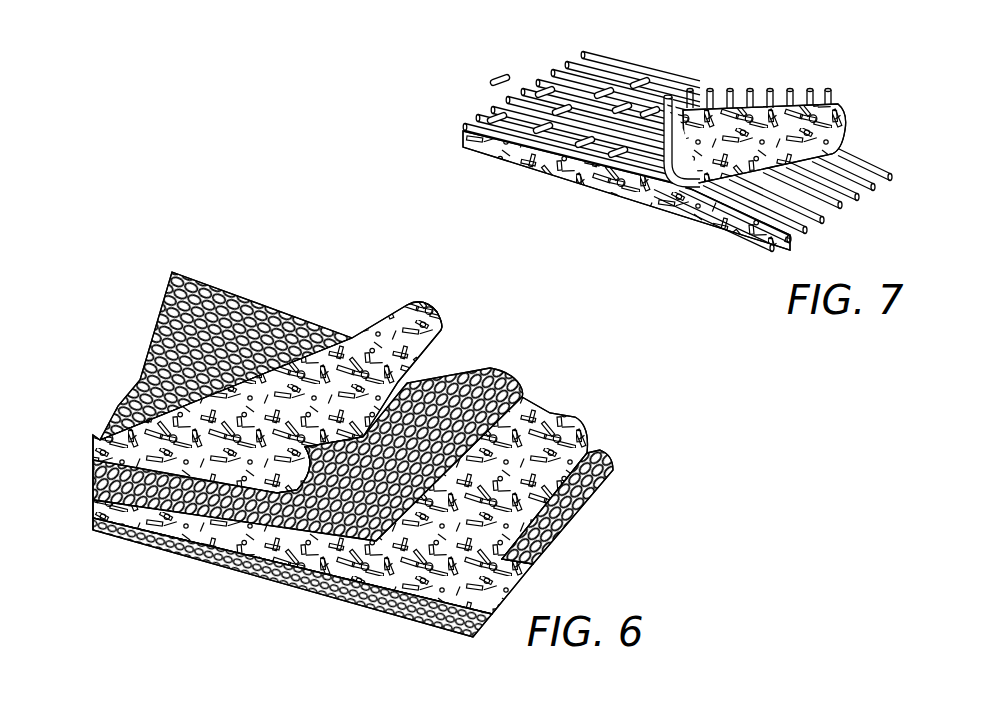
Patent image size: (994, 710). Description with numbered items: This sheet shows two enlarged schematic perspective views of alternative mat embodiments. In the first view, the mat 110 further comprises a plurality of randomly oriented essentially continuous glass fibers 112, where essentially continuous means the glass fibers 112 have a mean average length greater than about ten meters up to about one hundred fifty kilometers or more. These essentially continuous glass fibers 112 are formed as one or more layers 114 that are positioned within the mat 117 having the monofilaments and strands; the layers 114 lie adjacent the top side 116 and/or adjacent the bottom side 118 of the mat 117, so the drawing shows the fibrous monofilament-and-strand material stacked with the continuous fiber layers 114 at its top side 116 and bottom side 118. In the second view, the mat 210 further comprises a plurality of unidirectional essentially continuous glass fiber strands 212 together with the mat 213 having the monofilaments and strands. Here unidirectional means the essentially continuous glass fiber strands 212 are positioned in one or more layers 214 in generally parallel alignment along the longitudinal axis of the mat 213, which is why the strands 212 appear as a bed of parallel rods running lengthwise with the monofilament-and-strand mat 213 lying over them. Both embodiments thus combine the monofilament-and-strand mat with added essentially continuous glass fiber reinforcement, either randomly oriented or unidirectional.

In FIG. 6, the mat 110 is at (227, 570).
In FIG. 6, the randomly oriented essentially continuous glass fibers 112 is at (570, 537).
In FIG. 6, the layers 114 is at (243, 282).
In FIG. 6, the top side 116 is at (357, 317).
In FIG. 6, the mat having the monofilaments and strands 117 is at (103, 437).
In FIG. 6, the bottom side 118 is at (440, 330).
In FIG. 7, the mat 210 is at (633, 205).
In FIG. 7, the unidirectional essentially continuous glass fiber strands 212 is at (893, 178).
In FIG. 7, the mat having the monofilaments and strands 213 is at (848, 128).
In FIG. 7, the layers 214 is at (762, 88).